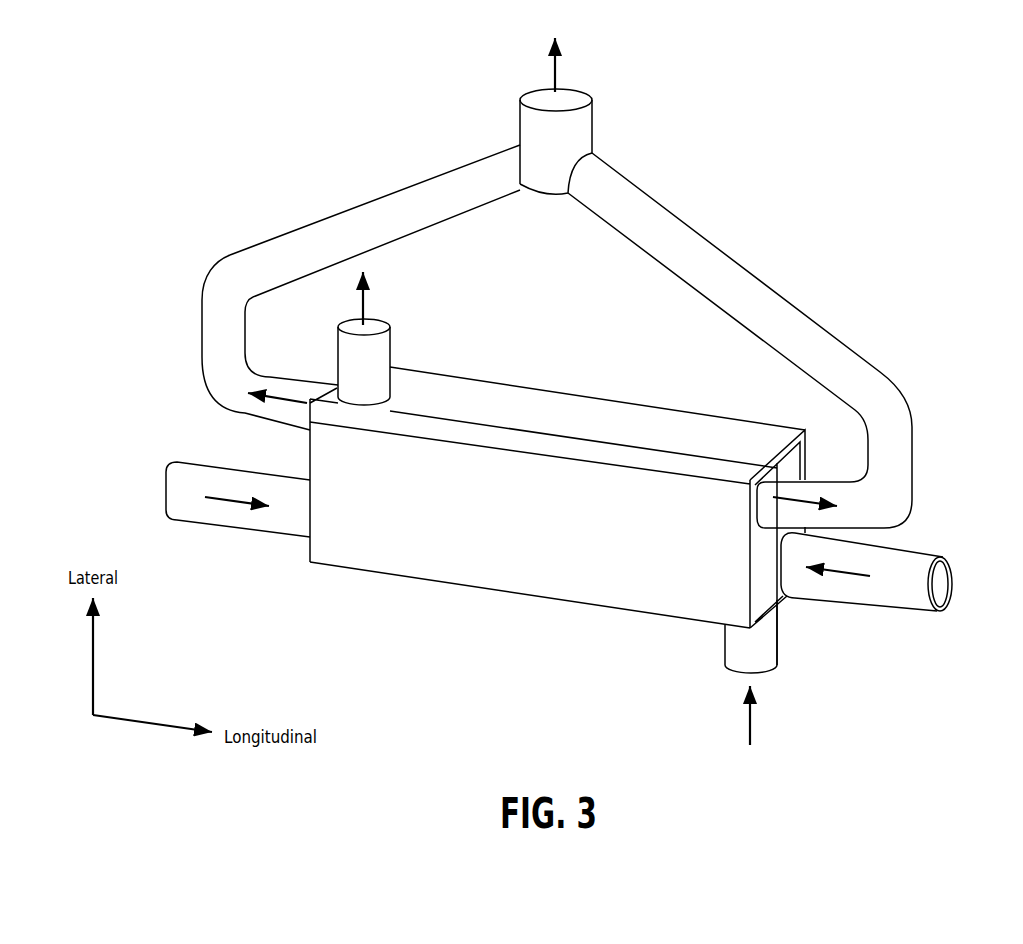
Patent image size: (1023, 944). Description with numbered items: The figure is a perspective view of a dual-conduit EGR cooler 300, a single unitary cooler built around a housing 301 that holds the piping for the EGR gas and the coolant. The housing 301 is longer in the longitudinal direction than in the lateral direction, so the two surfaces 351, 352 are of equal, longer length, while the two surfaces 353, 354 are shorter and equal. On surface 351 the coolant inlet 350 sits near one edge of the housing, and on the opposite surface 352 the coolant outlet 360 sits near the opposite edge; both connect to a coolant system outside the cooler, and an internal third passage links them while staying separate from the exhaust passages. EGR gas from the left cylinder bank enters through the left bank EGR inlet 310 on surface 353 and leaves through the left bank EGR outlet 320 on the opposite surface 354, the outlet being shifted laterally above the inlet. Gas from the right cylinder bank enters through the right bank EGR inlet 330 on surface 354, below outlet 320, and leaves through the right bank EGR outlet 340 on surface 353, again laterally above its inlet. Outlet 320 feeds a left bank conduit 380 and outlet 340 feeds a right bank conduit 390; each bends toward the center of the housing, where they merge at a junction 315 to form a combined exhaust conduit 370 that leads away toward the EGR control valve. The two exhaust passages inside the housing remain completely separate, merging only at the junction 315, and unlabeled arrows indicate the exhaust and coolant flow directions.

The dual-conduit EGR cooler 300 is at (198, 117).
The housing 301 is at (551, 524).
The left bank EGR inlet 310 is at (910, 613).
The junction 315 is at (541, 200).
The left bank EGR outlet 320 is at (212, 403).
The right bank EGR inlet 330 is at (192, 462).
The right bank EGR outlet 340 is at (895, 518).
The coolant inlet 350 is at (722, 660).
The surface 351 is at (623, 430).
The surface 352 is at (610, 617).
The surface 353 is at (767, 587).
The surface 354 is at (307, 543).
The coolant outlet 360 is at (398, 343).
The combined exhaust conduit 370 is at (518, 108).
The left bank conduit 380 is at (380, 188).
The right bank conduit 390 is at (662, 190).